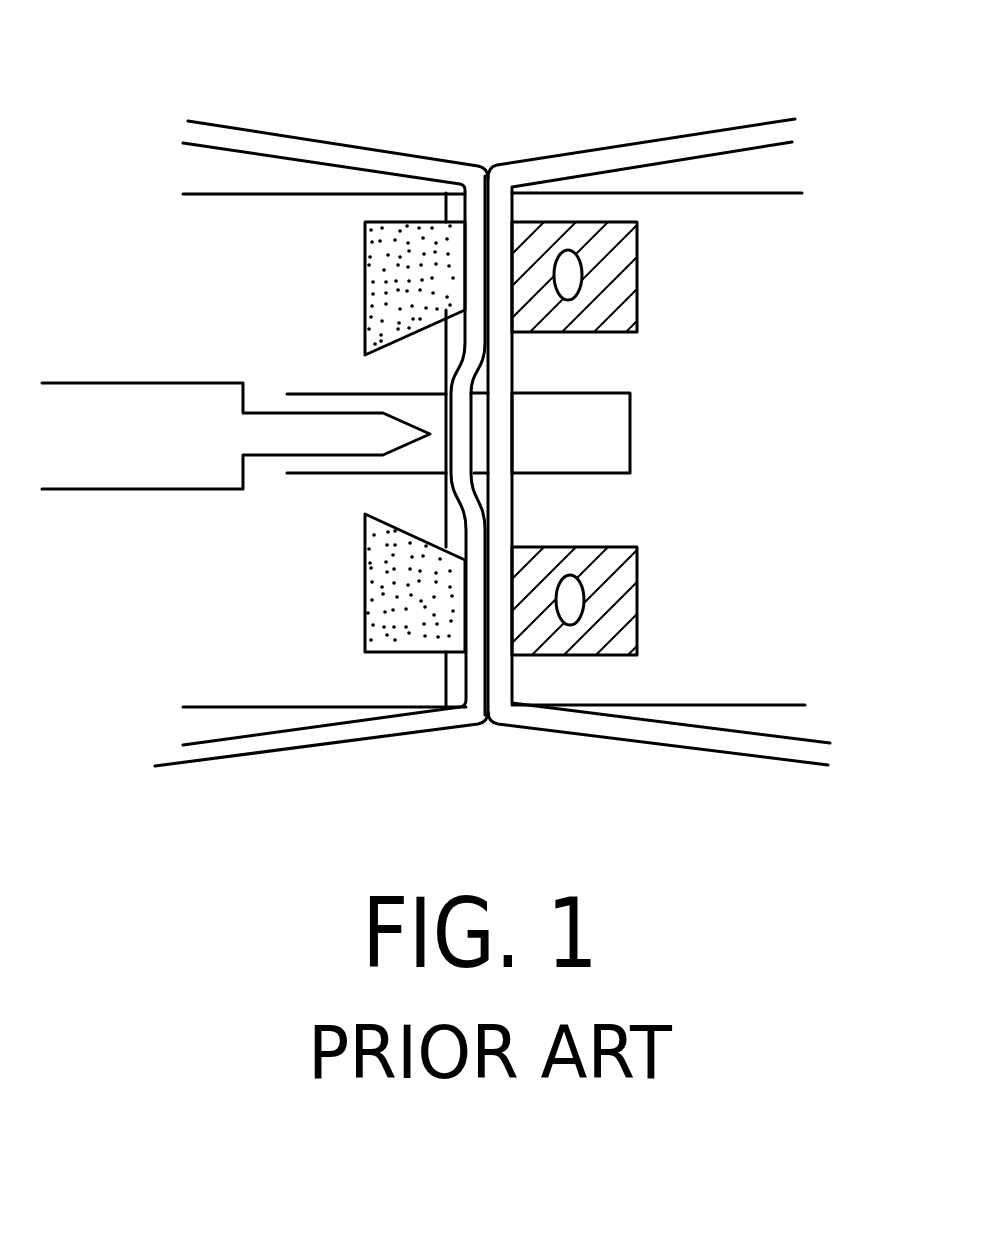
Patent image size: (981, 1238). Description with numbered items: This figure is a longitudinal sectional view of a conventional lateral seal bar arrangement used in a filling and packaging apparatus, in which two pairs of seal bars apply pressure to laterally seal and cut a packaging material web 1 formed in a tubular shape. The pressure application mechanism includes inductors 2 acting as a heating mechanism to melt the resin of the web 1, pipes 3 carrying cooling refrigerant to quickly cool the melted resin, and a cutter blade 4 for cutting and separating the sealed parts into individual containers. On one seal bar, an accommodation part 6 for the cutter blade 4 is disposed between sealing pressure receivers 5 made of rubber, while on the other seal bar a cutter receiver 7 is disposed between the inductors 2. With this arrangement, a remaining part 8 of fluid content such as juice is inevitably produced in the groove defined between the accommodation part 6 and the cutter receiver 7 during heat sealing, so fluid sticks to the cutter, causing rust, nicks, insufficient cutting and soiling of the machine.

The web 1 is at (683, 135).
The inductors 2 is at (638, 258).
The pipes of cooling refrigerant 3 is at (582, 601).
The cutter blade 4 is at (303, 413).
The sealing pressure receivers 5 is at (367, 638).
The accommodation part 6 is at (333, 473).
The cutter receiver 7 is at (632, 400).
The remaining part 8 is at (488, 493).